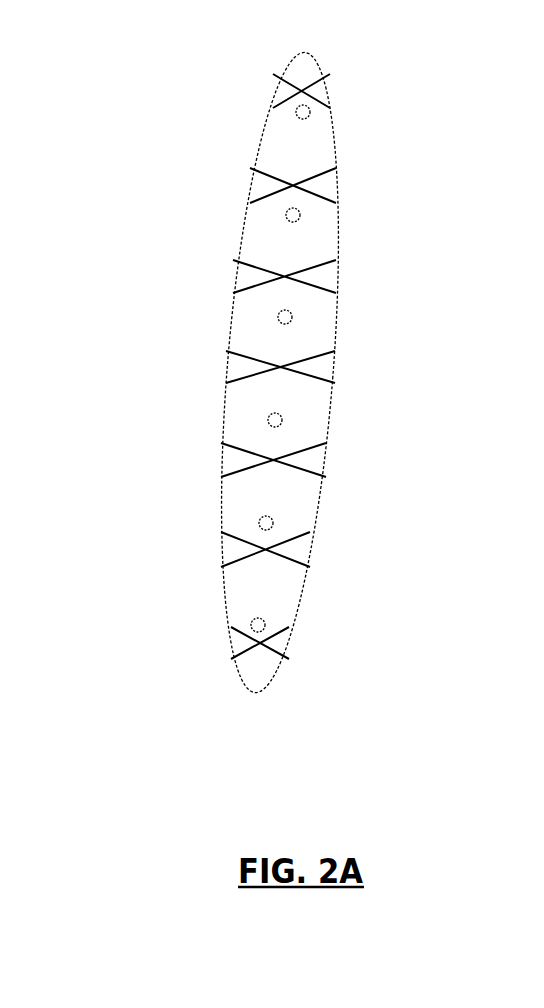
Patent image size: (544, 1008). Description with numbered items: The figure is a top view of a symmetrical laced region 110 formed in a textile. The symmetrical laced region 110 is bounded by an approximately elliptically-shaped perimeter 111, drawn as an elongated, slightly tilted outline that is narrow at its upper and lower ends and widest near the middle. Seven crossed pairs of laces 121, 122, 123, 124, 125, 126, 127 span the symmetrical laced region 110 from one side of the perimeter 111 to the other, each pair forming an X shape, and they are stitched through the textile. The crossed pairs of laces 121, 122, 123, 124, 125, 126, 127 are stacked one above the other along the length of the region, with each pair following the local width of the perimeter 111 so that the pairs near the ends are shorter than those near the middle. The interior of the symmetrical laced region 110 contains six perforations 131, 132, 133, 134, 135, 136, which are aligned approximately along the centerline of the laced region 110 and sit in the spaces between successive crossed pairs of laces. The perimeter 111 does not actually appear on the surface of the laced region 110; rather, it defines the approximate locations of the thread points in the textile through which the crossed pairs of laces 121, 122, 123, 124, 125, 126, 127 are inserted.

The symmetrical laced region 110 is at (322, 364).
The perimeter 111 is at (327, 408).
The crossed pair of laces 121 is at (267, 72).
The crossed pair of laces 122 is at (248, 166).
The crossed pair of laces 123 is at (222, 251).
The crossed pair of laces 124 is at (218, 347).
The crossed pair of laces 125 is at (208, 442).
The crossed pair of laces 126 is at (218, 529).
The crossed pair of laces 127 is at (223, 622).
The perforation 131 is at (310, 115).
The perforation 132 is at (300, 215).
The perforation 133 is at (292, 318).
The perforation 134 is at (282, 423).
The perforation 135 is at (273, 524).
The perforation 136 is at (265, 627).